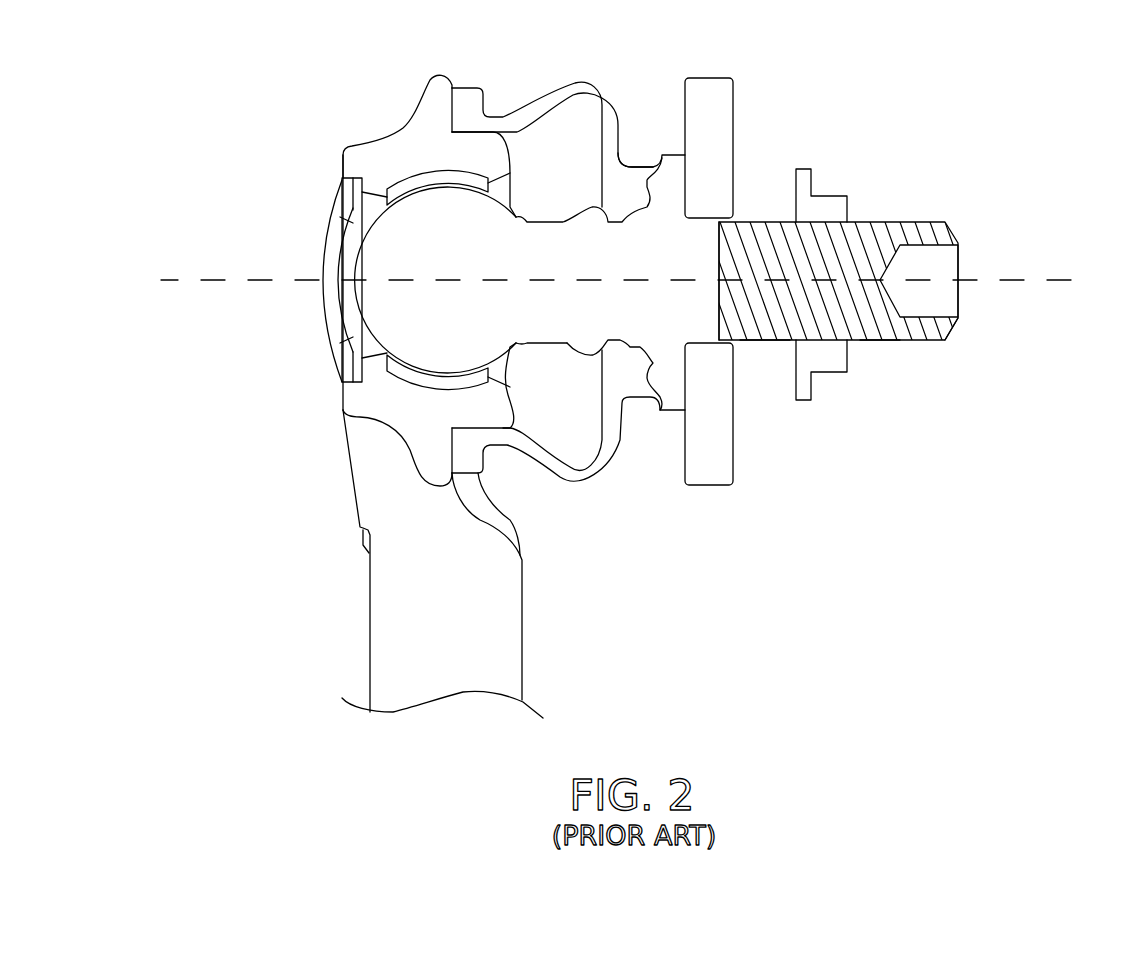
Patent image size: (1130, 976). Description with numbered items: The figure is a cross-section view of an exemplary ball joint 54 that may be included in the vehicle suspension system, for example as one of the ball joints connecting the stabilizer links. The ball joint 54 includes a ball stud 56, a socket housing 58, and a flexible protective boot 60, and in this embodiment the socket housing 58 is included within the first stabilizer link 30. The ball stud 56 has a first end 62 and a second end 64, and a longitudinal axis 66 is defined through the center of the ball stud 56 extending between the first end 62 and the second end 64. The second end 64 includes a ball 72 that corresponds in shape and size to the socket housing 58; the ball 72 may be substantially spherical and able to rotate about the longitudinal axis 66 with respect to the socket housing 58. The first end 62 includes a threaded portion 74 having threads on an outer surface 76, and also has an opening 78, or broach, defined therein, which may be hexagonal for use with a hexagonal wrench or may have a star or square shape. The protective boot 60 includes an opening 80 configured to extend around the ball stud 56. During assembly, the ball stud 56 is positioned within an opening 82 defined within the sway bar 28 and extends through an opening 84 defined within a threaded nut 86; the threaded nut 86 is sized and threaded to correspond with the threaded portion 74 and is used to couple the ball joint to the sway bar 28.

The sway bar 28 is at (733, 93).
The first stabilizer link 30 is at (368, 578).
The ball joint 54 is at (322, 117).
The ball stud 56 is at (573, 343).
The socket housing 58 is at (407, 117).
The flexible protective boot 60 is at (560, 112).
The first end 62 is at (1056, 338).
The second end 64 is at (300, 334).
The longitudinal axis 66 is at (1063, 277).
The ball 72 is at (370, 233).
The threaded portion 74 is at (767, 343).
The outer surface 76 is at (880, 343).
The opening 78 is at (945, 268).
The opening 80 is at (620, 200).
The opening 82 is at (750, 214).
The opening 84 is at (848, 252).
The threaded nut 86 is at (830, 196).